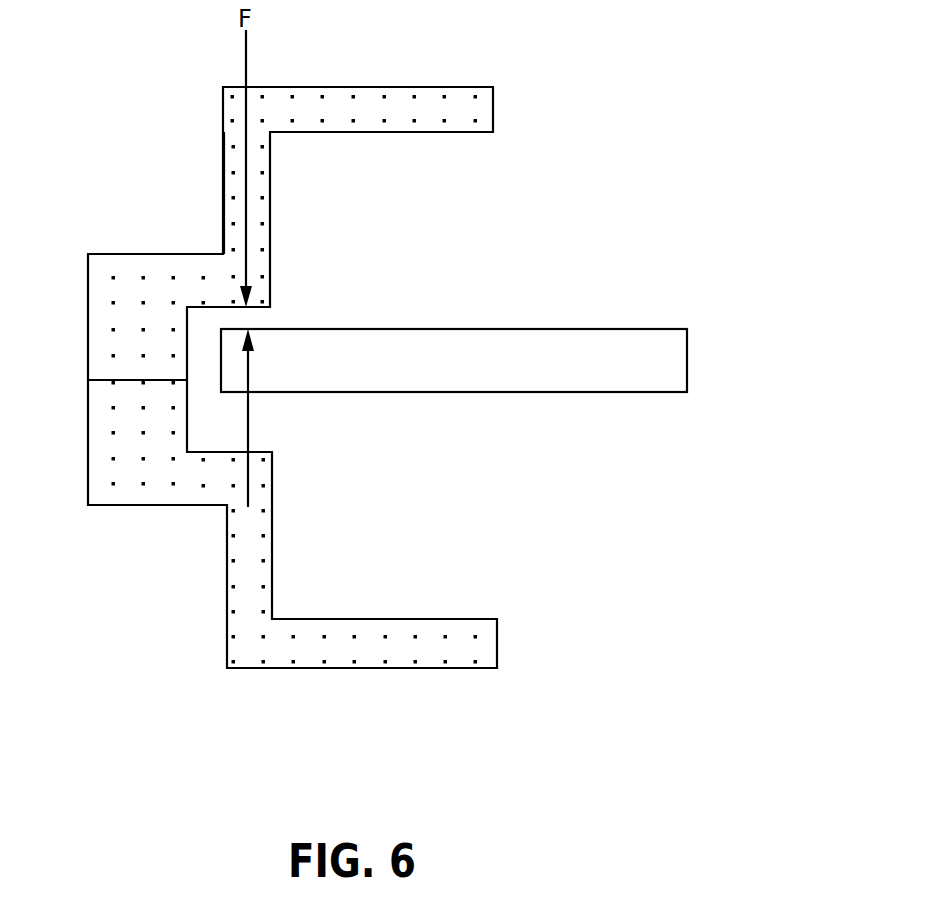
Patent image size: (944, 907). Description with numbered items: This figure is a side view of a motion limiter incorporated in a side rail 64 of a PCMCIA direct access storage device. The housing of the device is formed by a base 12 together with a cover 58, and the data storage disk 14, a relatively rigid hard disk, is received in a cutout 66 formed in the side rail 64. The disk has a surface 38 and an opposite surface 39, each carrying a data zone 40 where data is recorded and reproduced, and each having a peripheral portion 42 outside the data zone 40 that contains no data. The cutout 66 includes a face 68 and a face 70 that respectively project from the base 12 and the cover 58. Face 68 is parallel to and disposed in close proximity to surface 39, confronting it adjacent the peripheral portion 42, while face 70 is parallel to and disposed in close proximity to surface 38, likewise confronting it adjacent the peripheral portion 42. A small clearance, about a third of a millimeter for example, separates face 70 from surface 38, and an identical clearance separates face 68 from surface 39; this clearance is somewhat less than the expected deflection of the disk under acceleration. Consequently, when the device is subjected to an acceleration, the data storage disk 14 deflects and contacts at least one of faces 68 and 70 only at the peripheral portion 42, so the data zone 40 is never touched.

The base 12 is at (247, 627).
The data storage disk 14 is at (392, 345).
The surface 38 is at (553, 328).
The opposite surface 39 is at (547, 393).
The data zone 40 is at (489, 377).
The peripheral portion 42 is at (255, 368).
The cover 58 is at (238, 131).
The side rail 64 is at (106, 344).
The cutout 66 is at (207, 352).
The face 68 is at (243, 452).
The face 70 is at (233, 309).